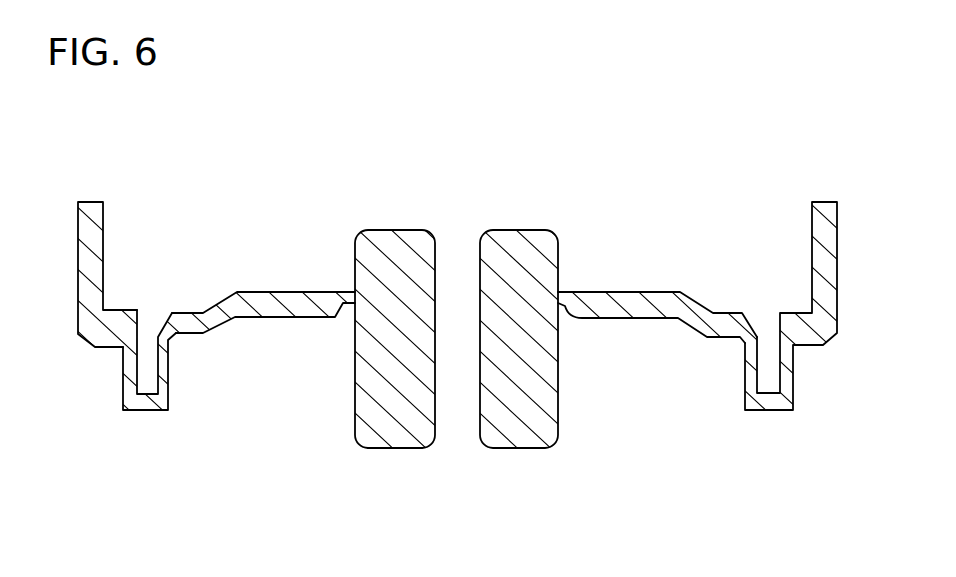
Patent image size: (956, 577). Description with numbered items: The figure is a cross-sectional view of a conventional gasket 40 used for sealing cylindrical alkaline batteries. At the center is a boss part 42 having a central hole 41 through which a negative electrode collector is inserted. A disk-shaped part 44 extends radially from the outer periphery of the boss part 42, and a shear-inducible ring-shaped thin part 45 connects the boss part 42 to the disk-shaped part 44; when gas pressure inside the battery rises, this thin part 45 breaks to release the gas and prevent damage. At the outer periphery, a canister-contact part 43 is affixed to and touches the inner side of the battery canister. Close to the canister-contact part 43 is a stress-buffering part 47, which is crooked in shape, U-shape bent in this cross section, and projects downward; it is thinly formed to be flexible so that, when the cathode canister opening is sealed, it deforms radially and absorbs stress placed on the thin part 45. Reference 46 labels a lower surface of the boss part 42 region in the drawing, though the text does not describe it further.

The gasket 40 is at (147, 183).
The central hole 41 is at (480, 260).
The boss part 42 is at (355, 279).
The canister-contact part 43 is at (104, 250).
The disk-shaped part 44 is at (247, 292).
The shear-inducible ring-shaped thin part 45 is at (562, 305).
The bottom surface 46 is at (408, 448).
The stress-buffering part 47 is at (169, 372).